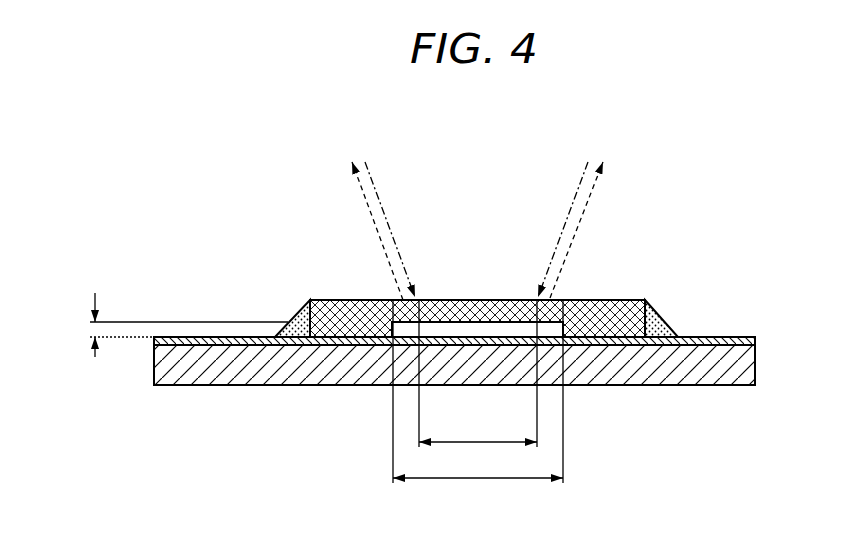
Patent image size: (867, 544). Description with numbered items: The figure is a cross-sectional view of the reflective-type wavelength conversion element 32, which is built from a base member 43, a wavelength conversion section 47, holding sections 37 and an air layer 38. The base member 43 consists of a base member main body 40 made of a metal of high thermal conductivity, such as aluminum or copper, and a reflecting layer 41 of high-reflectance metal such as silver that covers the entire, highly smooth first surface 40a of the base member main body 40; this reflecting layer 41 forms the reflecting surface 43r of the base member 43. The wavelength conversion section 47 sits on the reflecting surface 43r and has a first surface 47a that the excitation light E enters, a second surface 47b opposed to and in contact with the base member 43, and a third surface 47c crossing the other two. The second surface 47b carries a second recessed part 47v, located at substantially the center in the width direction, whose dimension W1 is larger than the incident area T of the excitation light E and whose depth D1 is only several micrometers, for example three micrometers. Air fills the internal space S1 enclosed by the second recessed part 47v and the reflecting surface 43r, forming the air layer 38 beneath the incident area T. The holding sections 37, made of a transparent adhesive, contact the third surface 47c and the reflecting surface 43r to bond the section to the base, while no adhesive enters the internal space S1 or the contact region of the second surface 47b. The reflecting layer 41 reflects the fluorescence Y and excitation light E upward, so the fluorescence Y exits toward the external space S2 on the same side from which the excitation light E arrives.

The wavelength conversion element 32 is at (486, 218).
The holding section 37 is at (292, 325).
The air layer 38 is at (433, 330).
The base member main body 40 is at (755, 372).
The first surface 40a is at (740, 337).
The reflecting layer 41 is at (755, 342).
The base member 43 is at (510, 359).
The reflecting surface 43r is at (721, 337).
The wavelength conversion section 47 is at (343, 300).
The first surface 47a is at (613, 300).
The second surface 47b is at (595, 338).
The third surface 47c is at (306, 300).
The second recessed part 47v is at (514, 325).
The depth D1 is at (172, 325).
The excitation light E is at (559, 240).
The fluorescence Y is at (572, 241).
The internal space S1 is at (461, 323).
The external space S2 is at (223, 176).
The incident area T is at (478, 373).
The dimension W1 is at (478, 391).